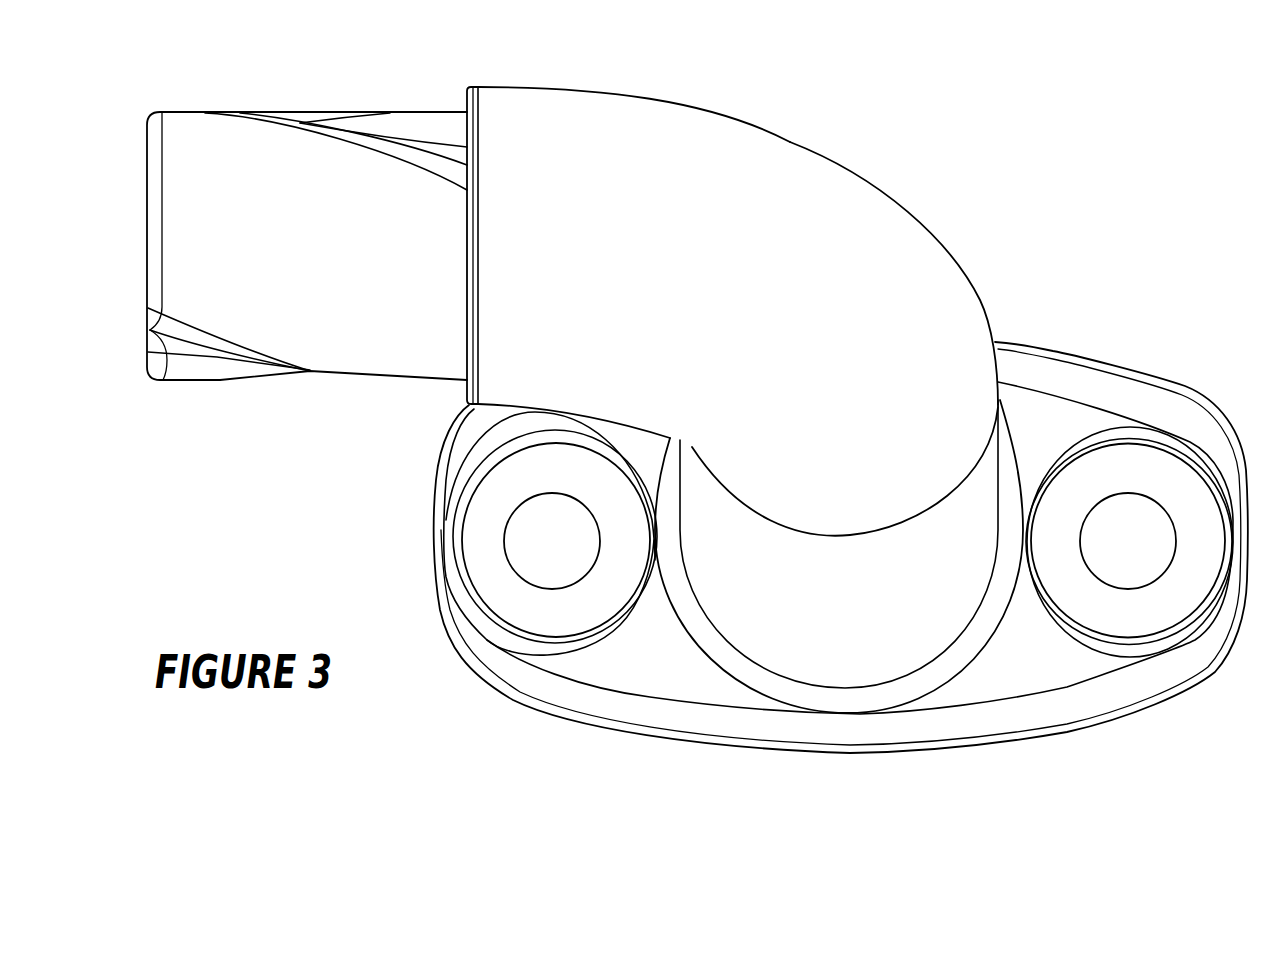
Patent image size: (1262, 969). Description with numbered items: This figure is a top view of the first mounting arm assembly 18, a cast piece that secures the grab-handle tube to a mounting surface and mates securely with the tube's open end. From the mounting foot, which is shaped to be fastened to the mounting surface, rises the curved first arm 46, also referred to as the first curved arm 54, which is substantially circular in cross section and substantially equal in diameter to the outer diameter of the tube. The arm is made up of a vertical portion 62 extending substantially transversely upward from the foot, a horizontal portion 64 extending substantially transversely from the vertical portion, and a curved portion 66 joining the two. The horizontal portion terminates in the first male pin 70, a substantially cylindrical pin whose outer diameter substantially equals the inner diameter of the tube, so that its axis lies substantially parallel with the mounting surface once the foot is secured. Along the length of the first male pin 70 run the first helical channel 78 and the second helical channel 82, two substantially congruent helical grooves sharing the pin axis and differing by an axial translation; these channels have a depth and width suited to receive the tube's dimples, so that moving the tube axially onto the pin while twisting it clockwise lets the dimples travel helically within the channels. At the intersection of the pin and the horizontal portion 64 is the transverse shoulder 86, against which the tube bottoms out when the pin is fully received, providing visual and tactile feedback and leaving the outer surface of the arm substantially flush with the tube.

The first mounting arm assembly 18 is at (356, 490).
The curved first arm 46 is at (1157, 394).
The first curved arm 54 is at (928, 212).
The vertical portion 62 is at (963, 580).
The horizontal portion 64 is at (555, 108).
The curved portion 66 is at (833, 190).
The first male pin 70 is at (218, 151).
The first helical channel 78 is at (394, 134).
The second helical channel 82 is at (220, 357).
The transverse shoulder 86 is at (466, 97).